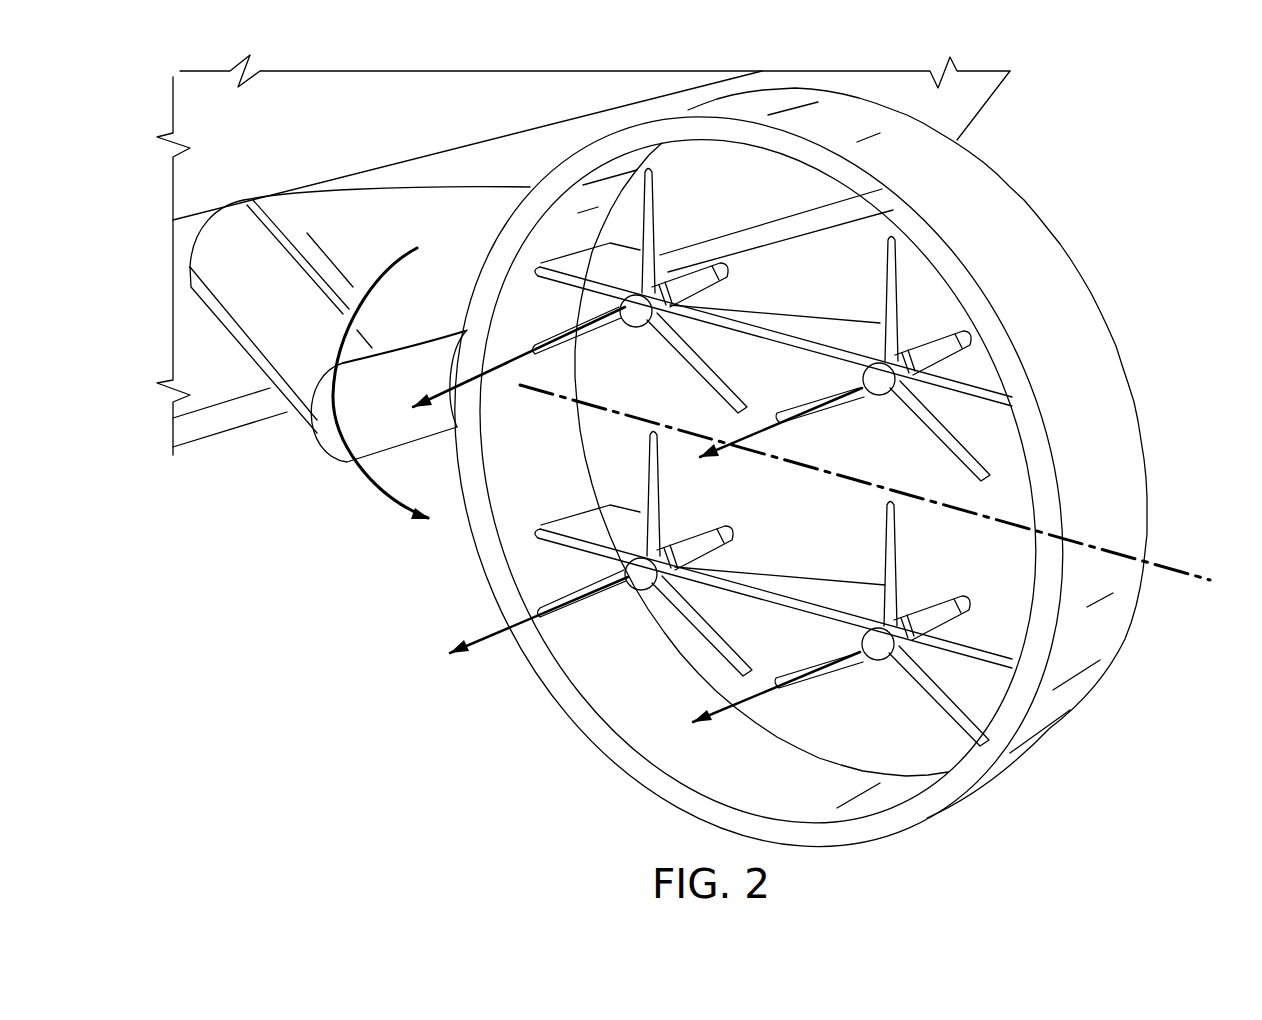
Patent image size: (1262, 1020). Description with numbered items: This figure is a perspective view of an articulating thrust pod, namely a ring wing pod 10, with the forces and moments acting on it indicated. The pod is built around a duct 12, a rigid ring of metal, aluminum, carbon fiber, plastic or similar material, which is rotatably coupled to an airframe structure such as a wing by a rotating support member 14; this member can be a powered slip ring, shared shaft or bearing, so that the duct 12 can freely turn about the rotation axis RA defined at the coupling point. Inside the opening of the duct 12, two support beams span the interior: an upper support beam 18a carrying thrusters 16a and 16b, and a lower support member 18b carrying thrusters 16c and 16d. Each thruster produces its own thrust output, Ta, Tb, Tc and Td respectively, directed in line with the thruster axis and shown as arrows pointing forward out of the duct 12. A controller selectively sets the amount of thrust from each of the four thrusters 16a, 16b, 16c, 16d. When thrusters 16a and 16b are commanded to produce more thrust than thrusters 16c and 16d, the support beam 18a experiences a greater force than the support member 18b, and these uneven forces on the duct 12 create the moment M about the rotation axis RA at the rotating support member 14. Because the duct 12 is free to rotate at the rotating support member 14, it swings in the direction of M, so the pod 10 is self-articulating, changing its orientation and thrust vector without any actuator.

The ring wing pod 10 is at (699, 482).
The duct 12 is at (1125, 418).
The rotating support member 14 is at (448, 390).
The thruster 16a is at (635, 327).
The thruster 16b is at (878, 395).
The thruster 16c is at (633, 590).
The thruster 16d is at (875, 658).
The support beam 18a is at (823, 312).
The support member 18b is at (794, 560).